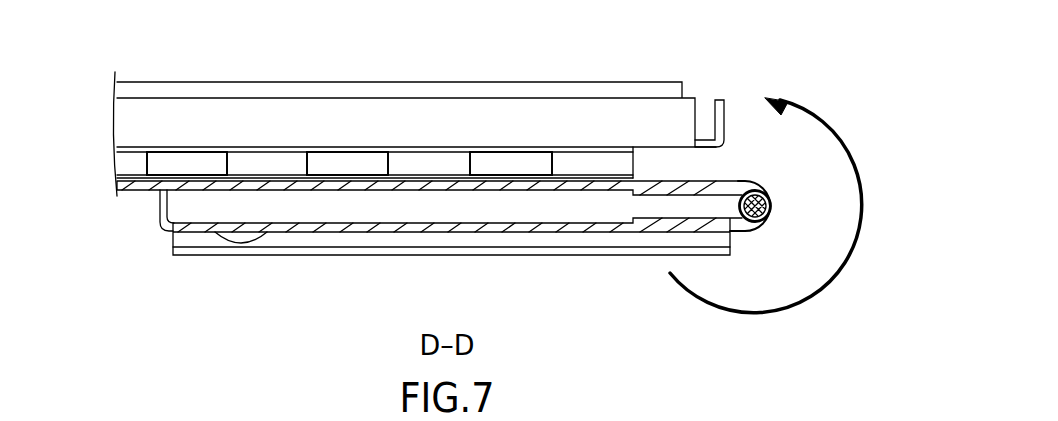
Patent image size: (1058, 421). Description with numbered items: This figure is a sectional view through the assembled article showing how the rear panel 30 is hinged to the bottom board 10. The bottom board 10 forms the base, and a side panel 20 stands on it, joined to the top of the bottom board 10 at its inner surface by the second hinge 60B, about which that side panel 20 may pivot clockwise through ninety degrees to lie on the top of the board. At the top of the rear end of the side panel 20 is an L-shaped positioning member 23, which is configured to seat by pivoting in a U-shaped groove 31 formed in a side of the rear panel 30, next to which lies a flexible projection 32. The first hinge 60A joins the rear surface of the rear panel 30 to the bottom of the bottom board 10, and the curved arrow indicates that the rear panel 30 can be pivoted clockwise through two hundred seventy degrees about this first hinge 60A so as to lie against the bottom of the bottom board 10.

The bottom board 10 is at (139, 187).
The side panel 20 is at (348, 115).
The L-shaped positioning member 23 is at (720, 100).
The rear panel 30 is at (512, 228).
The U-shaped groove 31 is at (188, 242).
The flexible projection 32 is at (242, 242).
The first hinge 60A is at (760, 190).
The second hinge 60B is at (177, 163).